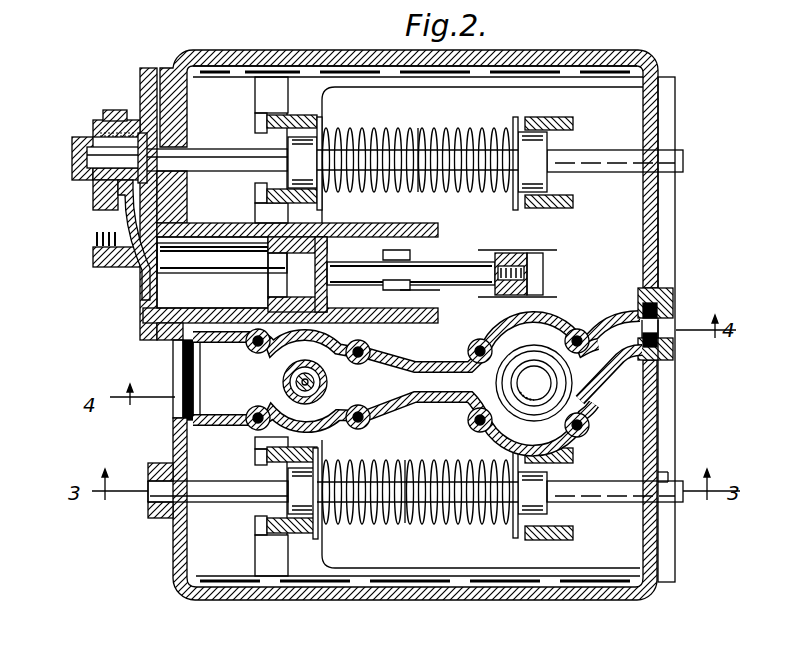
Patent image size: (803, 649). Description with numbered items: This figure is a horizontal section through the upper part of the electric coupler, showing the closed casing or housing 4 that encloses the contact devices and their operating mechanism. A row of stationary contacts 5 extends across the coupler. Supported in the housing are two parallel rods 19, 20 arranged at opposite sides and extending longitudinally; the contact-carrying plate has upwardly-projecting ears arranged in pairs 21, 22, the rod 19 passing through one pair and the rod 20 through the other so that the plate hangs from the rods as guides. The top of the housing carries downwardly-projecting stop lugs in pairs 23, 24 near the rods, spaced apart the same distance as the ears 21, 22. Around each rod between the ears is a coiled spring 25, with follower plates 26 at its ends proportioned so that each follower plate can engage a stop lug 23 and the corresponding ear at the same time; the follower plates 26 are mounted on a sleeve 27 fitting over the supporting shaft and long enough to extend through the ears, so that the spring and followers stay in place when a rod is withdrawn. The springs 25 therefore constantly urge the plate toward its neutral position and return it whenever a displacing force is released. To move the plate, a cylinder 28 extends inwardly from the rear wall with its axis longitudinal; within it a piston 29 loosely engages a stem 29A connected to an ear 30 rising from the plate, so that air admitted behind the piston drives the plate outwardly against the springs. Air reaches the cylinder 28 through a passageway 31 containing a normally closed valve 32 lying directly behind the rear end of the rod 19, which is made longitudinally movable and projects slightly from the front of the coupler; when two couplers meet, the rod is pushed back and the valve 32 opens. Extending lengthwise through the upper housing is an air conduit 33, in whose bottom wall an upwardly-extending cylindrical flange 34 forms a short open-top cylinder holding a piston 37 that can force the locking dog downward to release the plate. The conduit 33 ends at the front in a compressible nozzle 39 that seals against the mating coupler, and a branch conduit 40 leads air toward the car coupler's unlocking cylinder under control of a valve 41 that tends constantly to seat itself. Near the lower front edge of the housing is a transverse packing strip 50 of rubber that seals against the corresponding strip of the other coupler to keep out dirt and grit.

The casing or housing 4 is at (647, 593).
The stationary contacts 5 is at (262, 117).
The supporting rod 19 is at (593, 154).
The supporting rod 20 is at (608, 497).
The ear 21 is at (308, 162).
The ear 22 is at (535, 133).
The stop lug 23 is at (312, 124).
The stop lug 24 is at (571, 117).
The coiled spring 25 is at (418, 140).
The follower plate 26 is at (500, 541).
The sleeve 27 is at (456, 150).
The cylinder 28 is at (178, 287).
The piston 29 is at (283, 264).
The stem 29A is at (423, 260).
The ear 30 is at (515, 252).
The passageway 31 is at (130, 207).
The valve 32 is at (134, 128).
The air conduit 33 is at (395, 384).
The cylindrical flange 34 is at (548, 353).
The piston 37 is at (508, 362).
The compressible nozzle 39 is at (672, 310).
The branch conduit 40 is at (221, 379).
The valve 41 is at (301, 396).
The packing strip 50 is at (673, 558).